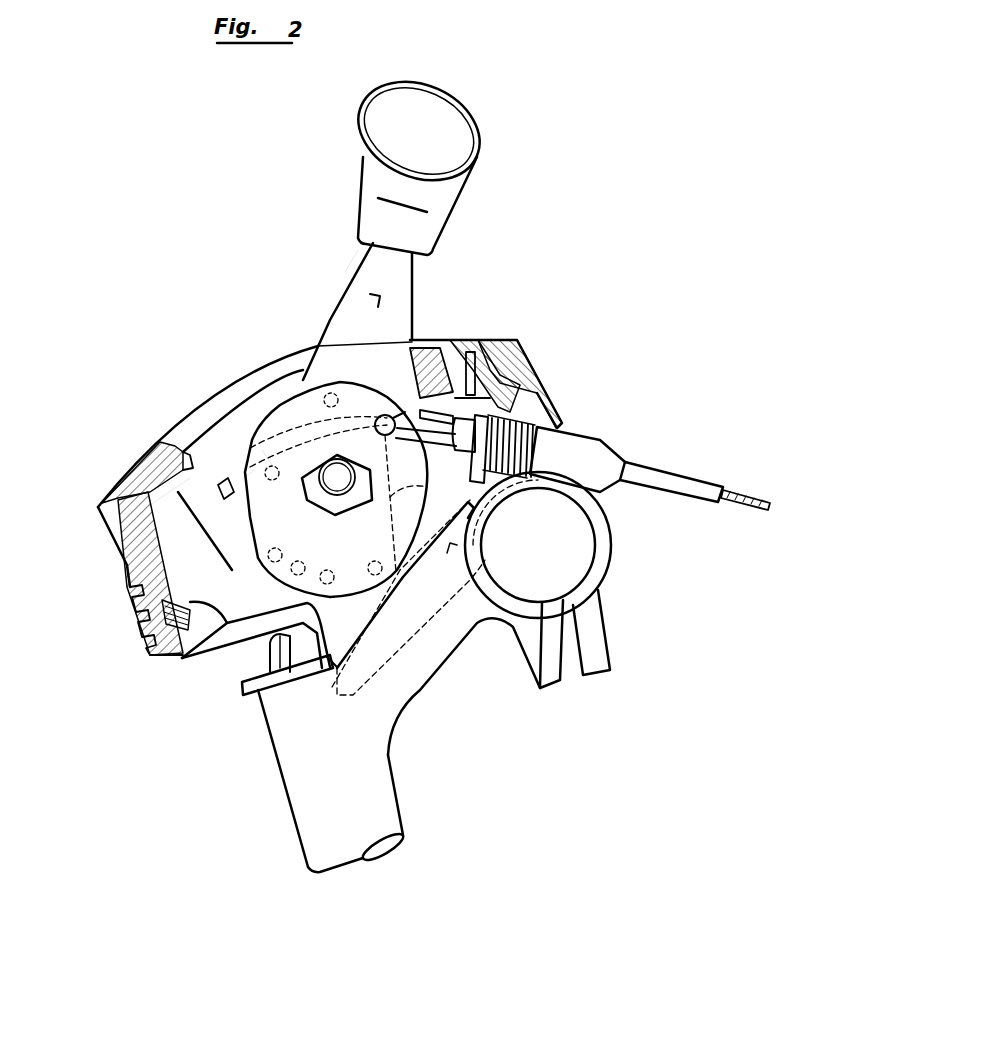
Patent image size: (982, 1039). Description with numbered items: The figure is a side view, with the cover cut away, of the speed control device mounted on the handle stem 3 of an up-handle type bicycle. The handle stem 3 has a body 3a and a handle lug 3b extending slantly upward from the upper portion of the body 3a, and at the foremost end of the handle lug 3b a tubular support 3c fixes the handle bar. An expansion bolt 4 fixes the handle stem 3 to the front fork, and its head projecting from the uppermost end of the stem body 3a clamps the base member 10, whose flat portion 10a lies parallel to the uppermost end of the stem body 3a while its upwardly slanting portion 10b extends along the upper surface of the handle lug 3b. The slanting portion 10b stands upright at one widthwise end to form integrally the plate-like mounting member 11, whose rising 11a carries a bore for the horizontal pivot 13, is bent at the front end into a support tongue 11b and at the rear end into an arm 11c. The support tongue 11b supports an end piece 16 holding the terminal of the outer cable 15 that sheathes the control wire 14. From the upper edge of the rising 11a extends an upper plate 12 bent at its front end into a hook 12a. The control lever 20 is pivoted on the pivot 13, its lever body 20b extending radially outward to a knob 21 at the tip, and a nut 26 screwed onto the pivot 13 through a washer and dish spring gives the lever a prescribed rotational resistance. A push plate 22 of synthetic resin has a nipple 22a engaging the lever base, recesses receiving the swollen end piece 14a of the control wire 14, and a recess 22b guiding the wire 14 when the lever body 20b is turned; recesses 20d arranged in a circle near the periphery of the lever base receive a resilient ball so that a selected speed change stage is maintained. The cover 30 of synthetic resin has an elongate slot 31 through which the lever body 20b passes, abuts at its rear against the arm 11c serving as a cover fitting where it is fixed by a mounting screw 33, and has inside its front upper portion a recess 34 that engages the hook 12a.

The handle stem 3 is at (400, 818).
The stem body 3a is at (305, 810).
The handle lug 3b is at (445, 660).
The support 3c is at (603, 558).
The expansion bolt 4 is at (270, 657).
The base member 10 is at (220, 703).
The flat portion 10a is at (248, 695).
The slanting portion 10b is at (388, 610).
The mounting member 11 is at (118, 482).
The rising 11a is at (190, 547).
The support tongue 11b is at (510, 405).
The arm 11c is at (165, 660).
The upper plate 12 is at (265, 443).
The hook 12a is at (492, 372).
The pivot 13 is at (272, 465).
The control wire 14 is at (745, 492).
The swollen end piece 14a is at (385, 415).
The outer cable 15 is at (663, 480).
The end piece 16 is at (600, 438).
The control lever 20 is at (403, 290).
The lever body 20b is at (372, 272).
The recesses 20d is at (410, 590).
The knob 21 is at (453, 193).
The push plate 22 is at (223, 536).
The nipple 22a is at (328, 392).
The recess 22b is at (432, 479).
The nut 26 is at (323, 470).
The cover 30 is at (478, 340).
The elongate slot 31 is at (245, 485).
The mounting screw 33 is at (148, 636).
The recess 34 is at (522, 345).